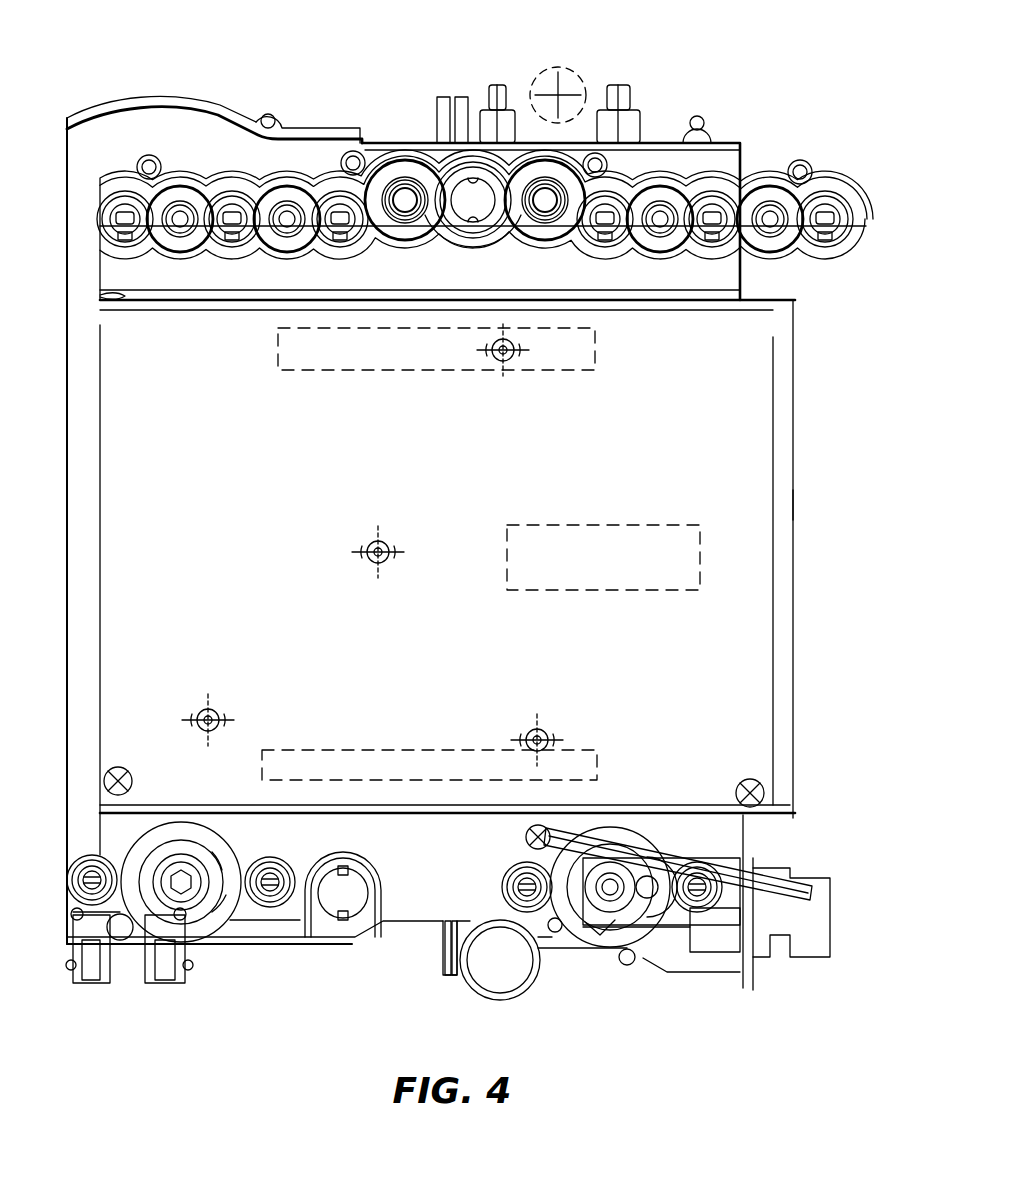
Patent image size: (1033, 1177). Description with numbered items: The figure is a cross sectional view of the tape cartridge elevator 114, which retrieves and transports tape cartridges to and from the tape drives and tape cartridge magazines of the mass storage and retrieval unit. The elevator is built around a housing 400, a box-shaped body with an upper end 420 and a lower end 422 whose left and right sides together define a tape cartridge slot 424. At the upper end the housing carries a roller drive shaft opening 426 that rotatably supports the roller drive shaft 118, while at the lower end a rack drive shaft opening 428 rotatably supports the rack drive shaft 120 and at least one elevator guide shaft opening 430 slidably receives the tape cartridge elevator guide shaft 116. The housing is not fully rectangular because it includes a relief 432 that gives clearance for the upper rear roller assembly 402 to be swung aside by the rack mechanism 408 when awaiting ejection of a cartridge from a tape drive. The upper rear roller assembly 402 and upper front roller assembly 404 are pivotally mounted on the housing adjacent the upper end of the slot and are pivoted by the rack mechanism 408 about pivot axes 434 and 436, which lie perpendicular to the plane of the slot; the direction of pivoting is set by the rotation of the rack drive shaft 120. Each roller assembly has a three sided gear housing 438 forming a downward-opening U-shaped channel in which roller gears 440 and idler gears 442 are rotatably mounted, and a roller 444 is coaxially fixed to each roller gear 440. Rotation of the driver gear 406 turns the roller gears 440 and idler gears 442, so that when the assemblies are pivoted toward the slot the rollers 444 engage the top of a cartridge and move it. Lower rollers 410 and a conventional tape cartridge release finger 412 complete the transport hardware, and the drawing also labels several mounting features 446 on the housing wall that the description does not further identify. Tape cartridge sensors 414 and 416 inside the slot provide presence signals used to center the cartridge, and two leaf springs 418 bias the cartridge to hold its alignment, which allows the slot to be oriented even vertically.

The tape cartridge elevator 114 is at (315, 70).
The tape cartridge elevator guide shaft 116 is at (488, 968).
The roller drive shaft 118 is at (478, 185).
The rack drive shaft 120 is at (352, 925).
The housing 400 is at (398, 135).
The upper rear roller assembly 402 is at (183, 343).
The upper front roller assembly 404 is at (658, 275).
The driver gear 406 is at (473, 225).
The rack mechanism 408 is at (625, 572).
The lower rollers 410 is at (165, 840).
The tape cartridge release finger 412 is at (812, 900).
The tape cartridge sensor 414 is at (118, 765).
The tape cartridge sensor 416 is at (764, 790).
The leaf spring 418 is at (570, 378).
The upper end 420 is at (660, 130).
The lower end 422 is at (282, 942).
The tape cartridge slot 424 is at (660, 518).
The roller drive shaft opening 426 is at (538, 240).
The rack drive shaft opening 428 is at (372, 866).
The elevator guide shaft opening 430 is at (535, 978).
The relief 432 is at (182, 100).
The pivot axis 434 is at (352, 120).
The pivot axis 436 is at (548, 195).
The gear housing 438 is at (198, 172).
The roller gear 440 is at (126, 198).
The idler gear 442 is at (180, 242).
The roller 444 is at (332, 190).
The mounting targets 446 is at (505, 365).